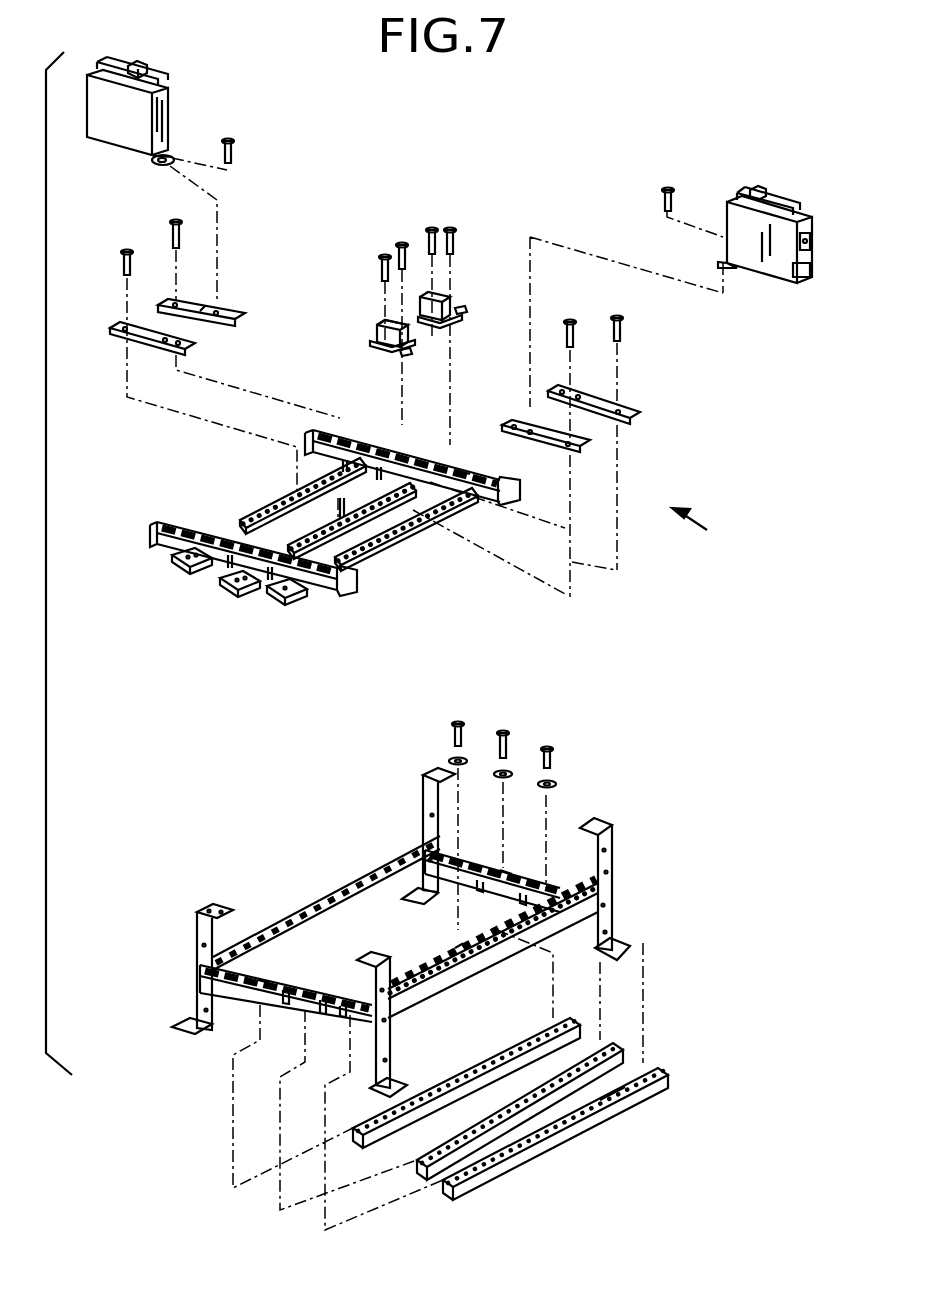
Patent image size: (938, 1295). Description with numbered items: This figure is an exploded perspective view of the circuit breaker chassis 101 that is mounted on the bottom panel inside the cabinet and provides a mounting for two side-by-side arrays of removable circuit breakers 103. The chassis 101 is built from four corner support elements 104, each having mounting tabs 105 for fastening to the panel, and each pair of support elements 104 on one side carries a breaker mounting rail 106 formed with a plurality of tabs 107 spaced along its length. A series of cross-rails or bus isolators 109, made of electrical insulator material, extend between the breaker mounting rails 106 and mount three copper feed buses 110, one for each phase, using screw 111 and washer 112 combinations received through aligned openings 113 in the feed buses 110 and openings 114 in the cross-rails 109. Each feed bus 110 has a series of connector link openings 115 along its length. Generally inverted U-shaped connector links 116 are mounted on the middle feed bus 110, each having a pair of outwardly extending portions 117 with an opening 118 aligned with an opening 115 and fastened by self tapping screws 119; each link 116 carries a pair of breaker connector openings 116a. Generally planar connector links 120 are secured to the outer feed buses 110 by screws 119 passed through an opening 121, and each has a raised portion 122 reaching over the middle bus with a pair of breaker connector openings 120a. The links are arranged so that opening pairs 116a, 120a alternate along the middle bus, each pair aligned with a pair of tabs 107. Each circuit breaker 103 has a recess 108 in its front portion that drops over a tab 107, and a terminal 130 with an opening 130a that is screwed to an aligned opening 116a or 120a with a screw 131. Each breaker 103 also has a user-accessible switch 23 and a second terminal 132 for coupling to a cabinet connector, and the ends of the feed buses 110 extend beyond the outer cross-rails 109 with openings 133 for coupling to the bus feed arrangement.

The switch 23 is at (140, 64).
The chassis 101 is at (717, 529).
The circuit breaker 103 is at (165, 116).
The corner support element 104 is at (197, 935).
The mounting tab 105 is at (177, 1027).
The breaker mounting rail 106 is at (332, 890).
The tab 107 is at (420, 966).
The recess 108 is at (802, 272).
The cross-rail 109 is at (548, 858).
The feed bus 110 is at (632, 1112).
The screw 111 is at (579, 743).
The washer 112 is at (447, 763).
The opening 113 is at (553, 1020).
The opening 114 is at (460, 458).
The connector link opening 115 is at (368, 540).
The inverted U-shaped connector link 116 is at (377, 335).
The breaker connector opening 116a is at (384, 322).
The outwardly extending portion 117 is at (400, 353).
The opening 118 is at (372, 350).
The screw 119 is at (612, 328).
The planar connector link 120 is at (112, 340).
The breaker connector opening 120a is at (213, 312).
The opening 121 is at (618, 413).
The raised portion 122 is at (186, 344).
The terminal 130 is at (158, 170).
The opening 130a is at (160, 172).
The screw 131 is at (242, 138).
The second terminal 132 is at (807, 235).
The opening 133 is at (300, 596).